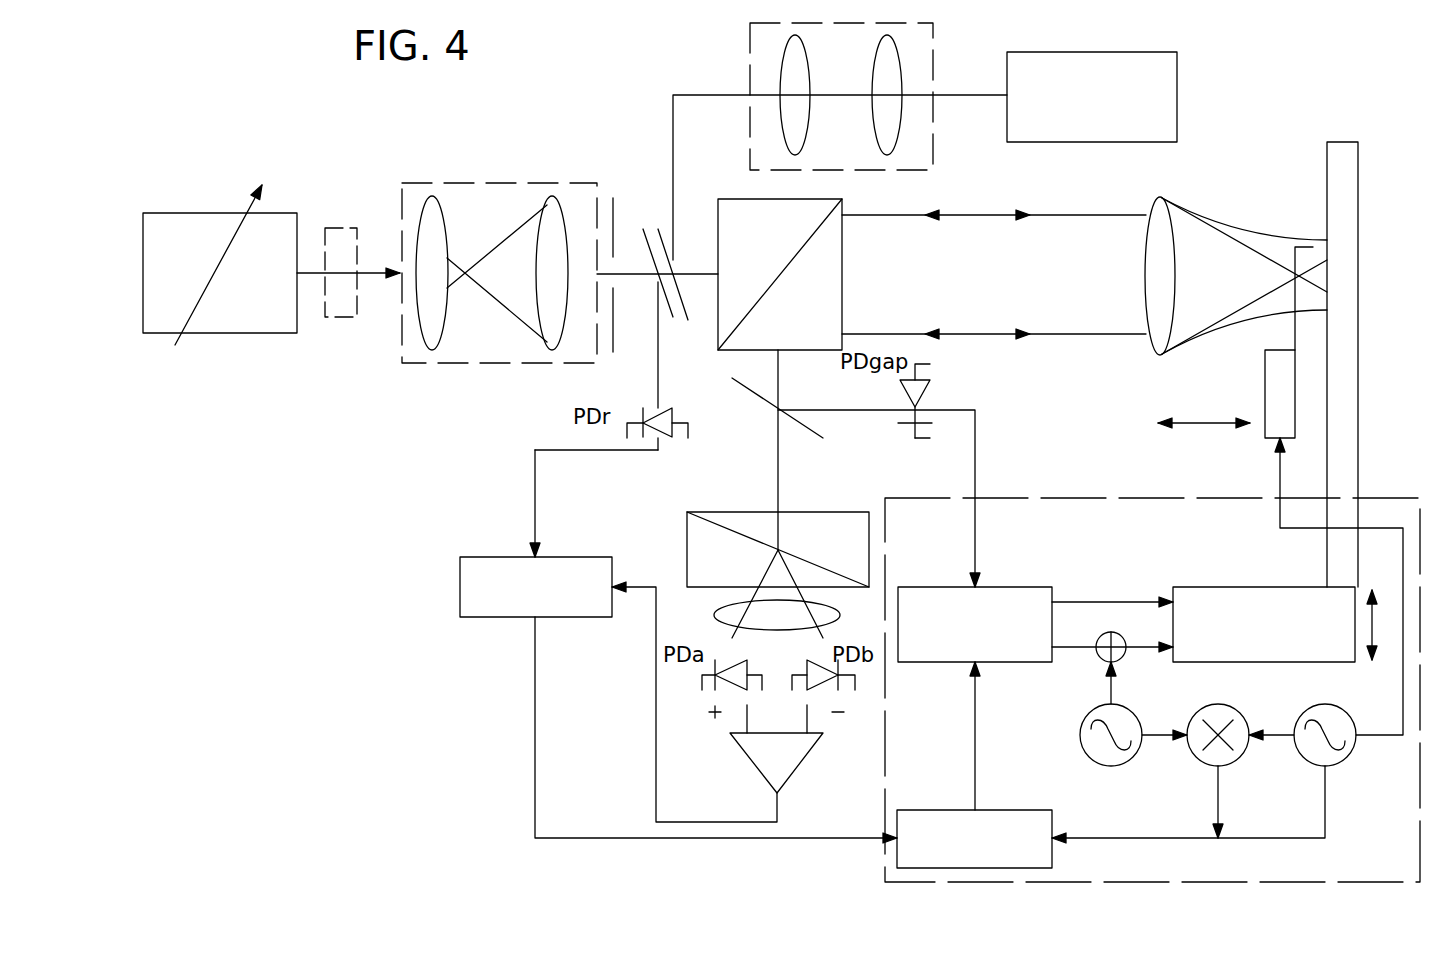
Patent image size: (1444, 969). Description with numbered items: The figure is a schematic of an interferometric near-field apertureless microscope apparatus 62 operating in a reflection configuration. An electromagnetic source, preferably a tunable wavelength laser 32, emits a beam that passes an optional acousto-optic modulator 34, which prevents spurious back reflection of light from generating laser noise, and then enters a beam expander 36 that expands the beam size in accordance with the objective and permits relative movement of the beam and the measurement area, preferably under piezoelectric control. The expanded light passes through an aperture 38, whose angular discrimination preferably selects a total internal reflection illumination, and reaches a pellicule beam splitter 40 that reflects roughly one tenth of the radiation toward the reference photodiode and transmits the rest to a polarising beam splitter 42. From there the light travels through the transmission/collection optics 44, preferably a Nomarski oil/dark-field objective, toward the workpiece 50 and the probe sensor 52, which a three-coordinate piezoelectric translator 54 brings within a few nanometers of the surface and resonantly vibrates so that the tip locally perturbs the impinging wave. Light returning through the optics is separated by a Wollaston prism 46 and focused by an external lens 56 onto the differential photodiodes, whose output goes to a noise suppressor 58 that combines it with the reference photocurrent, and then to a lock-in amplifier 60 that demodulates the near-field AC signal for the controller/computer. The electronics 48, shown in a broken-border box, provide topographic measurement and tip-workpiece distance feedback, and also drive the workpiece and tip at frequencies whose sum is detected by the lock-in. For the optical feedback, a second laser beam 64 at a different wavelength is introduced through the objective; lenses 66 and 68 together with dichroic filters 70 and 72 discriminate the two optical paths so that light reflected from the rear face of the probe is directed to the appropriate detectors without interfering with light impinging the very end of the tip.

The laser 32 is at (210, 333).
The acousto-optic modulator 34 is at (342, 228).
The beam expander 36 is at (507, 183).
The aperture 38 is at (607, 190).
The pellicule beam splitter 40 is at (655, 203).
The polarising beam splitter 42 is at (745, 199).
The transmission/collection optics 44 is at (1160, 197).
The Wollaston prism 46 is at (687, 540).
The electronics 48 is at (1152, 660).
The workpiece 50 is at (1327, 183).
The probe sensor 52 is at (1330, 249).
The piezoelectric translator 54 is at (1265, 375).
The external lens 56 is at (728, 610).
The noise suppressor 58 is at (497, 557).
The lock-in amplifier 60 is at (905, 810).
The apparatus 62 is at (440, 689).
The second laser beam 64 is at (1057, 142).
The lens 66 is at (810, 75).
The lens 68 is at (872, 113).
The dichroic filter 70 is at (812, 96).
The dichroic filter 72 is at (805, 428).